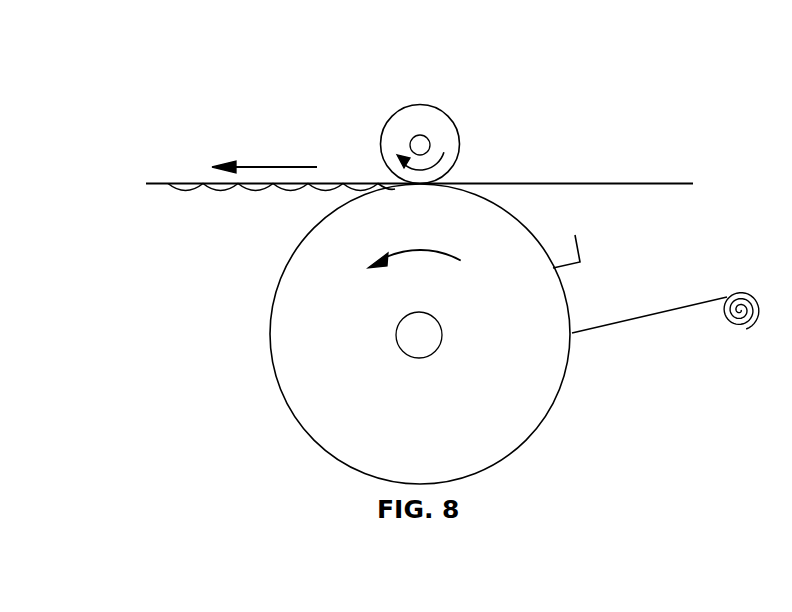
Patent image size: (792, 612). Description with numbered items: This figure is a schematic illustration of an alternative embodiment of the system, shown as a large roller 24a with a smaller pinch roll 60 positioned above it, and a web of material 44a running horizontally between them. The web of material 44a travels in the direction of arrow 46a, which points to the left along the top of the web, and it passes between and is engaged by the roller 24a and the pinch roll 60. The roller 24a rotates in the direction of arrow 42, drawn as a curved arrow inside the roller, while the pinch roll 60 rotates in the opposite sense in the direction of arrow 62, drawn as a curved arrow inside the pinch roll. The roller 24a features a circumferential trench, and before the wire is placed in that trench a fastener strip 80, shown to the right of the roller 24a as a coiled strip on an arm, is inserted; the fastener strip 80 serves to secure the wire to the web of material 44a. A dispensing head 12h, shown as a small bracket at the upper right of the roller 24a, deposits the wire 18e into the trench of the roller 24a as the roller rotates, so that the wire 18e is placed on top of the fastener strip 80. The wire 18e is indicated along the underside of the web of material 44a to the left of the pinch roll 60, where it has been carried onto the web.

The web of material 44a is at (636, 181).
The wire 18e is at (180, 190).
The arrow 46a is at (255, 166).
The pinch roll 60 is at (420, 104).
The arrow 62 is at (432, 185).
The roller 24a is at (420, 334).
The arrow 42 is at (445, 257).
The dispensing head 12h is at (577, 247).
The fastener strip 80 is at (700, 297).